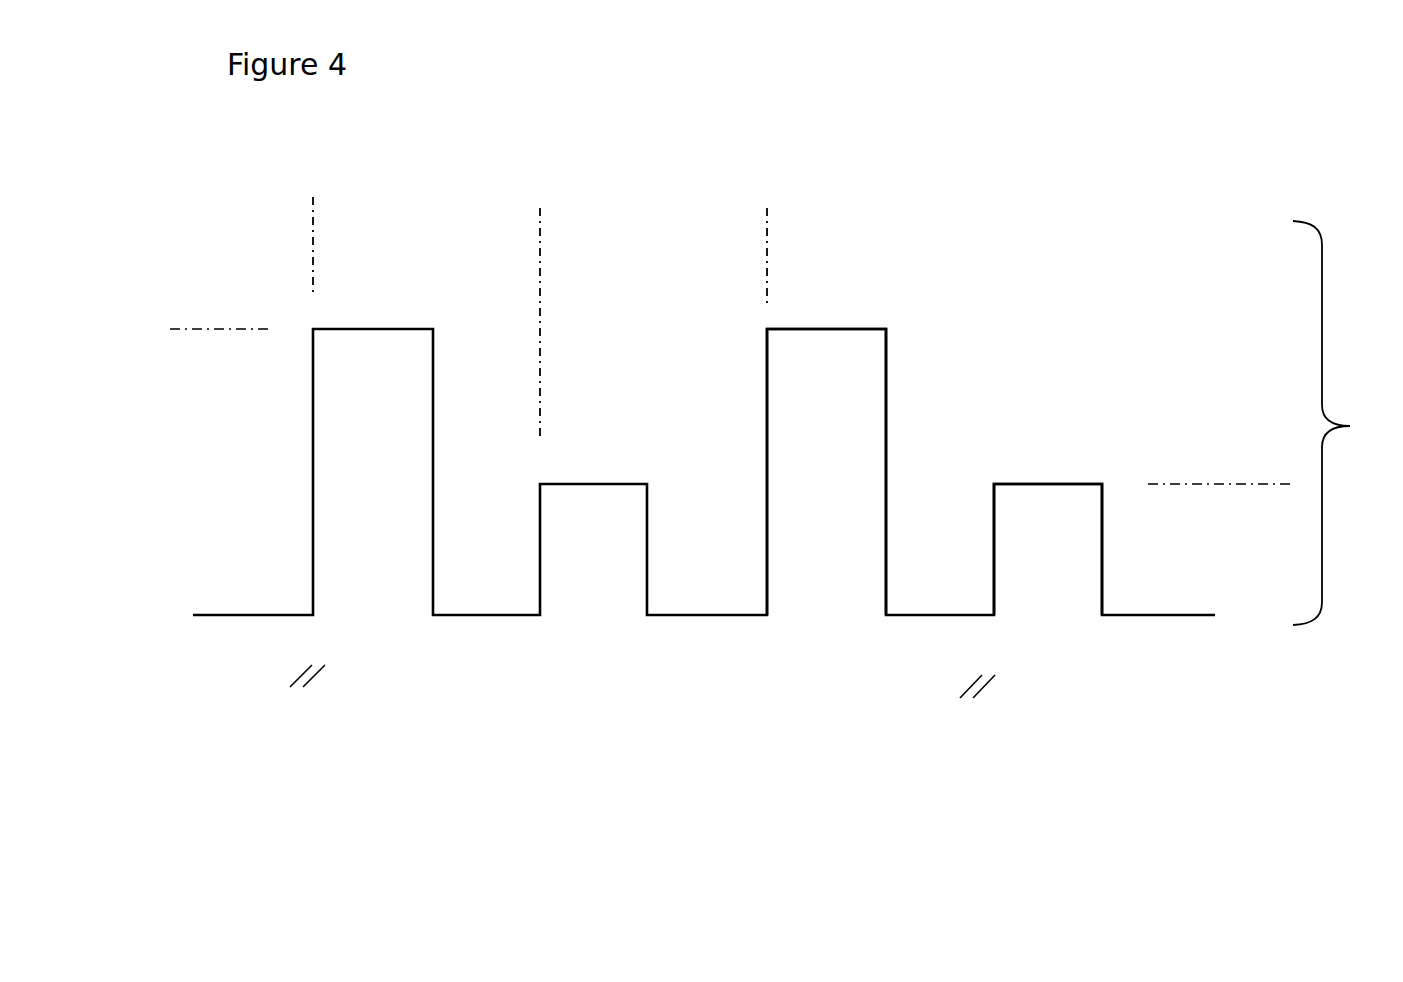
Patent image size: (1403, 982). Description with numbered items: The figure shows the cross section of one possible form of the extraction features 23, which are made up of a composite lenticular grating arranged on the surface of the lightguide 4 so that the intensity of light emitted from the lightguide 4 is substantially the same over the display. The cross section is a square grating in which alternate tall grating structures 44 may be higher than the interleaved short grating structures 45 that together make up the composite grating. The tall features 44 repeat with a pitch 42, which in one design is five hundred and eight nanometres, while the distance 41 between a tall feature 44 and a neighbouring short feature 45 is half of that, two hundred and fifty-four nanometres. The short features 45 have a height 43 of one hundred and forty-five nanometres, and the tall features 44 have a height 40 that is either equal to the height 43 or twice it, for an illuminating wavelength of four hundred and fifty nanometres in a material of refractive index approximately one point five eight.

The lightguide 4 is at (728, 689).
The extraction features 23 is at (1347, 423).
The height of the tall features 40 is at (182, 604).
The distance between tall and short features 41 is at (529, 221).
The pitch of the tall features 42 is at (324, 258).
The height of the short features 43 is at (1219, 604).
The tall grating structures 44 is at (880, 365).
The short grating structures 45 is at (1037, 484).